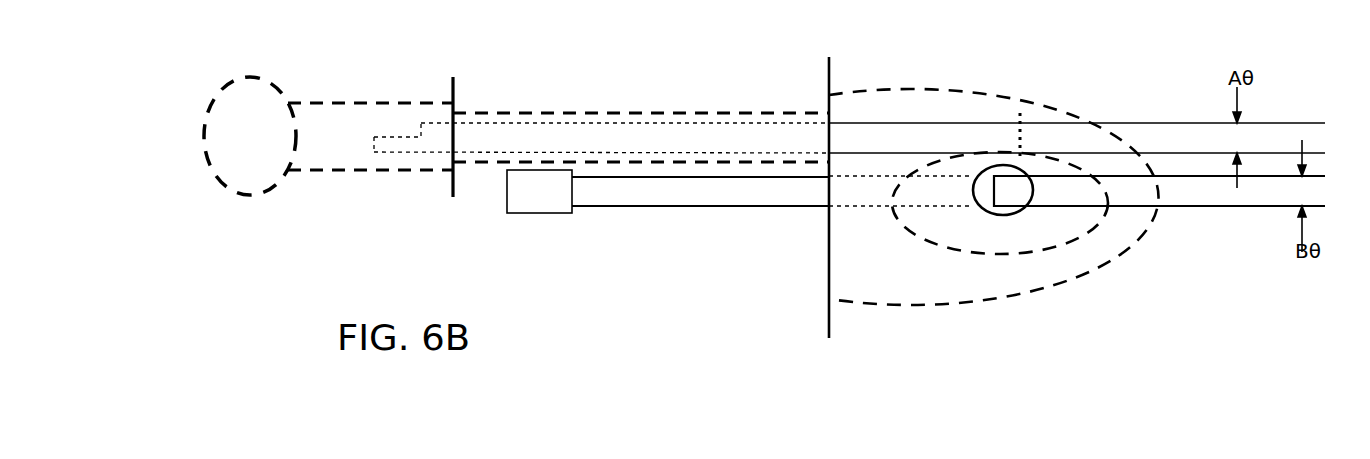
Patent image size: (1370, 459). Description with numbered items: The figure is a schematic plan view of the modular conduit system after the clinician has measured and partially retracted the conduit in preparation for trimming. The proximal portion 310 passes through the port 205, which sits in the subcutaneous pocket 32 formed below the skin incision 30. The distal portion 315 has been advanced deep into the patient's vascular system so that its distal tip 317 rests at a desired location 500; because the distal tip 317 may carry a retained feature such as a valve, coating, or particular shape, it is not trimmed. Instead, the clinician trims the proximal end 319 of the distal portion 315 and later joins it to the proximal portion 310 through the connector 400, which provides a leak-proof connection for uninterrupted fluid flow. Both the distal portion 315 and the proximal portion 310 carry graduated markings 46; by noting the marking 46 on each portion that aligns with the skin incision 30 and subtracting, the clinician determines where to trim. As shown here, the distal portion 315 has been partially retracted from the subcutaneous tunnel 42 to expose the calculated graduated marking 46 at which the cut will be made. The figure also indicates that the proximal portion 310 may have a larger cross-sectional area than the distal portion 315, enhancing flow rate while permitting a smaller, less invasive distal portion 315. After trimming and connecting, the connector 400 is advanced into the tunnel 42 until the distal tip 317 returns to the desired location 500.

The desired location 500 is at (247, 92).
The subcutaneous tunnel 42 is at (706, 113).
The distal tip 317 is at (432, 128).
The distal portion 315 is at (557, 130).
The proximal end 319 is at (1314, 123).
The connector 400 is at (541, 200).
The graduated markings 46 is at (659, 206).
The skin incision 30 is at (829, 338).
The subcutaneous pocket 32 is at (922, 307).
The port 205 is at (1008, 247).
The proximal portion 310 is at (1188, 195).